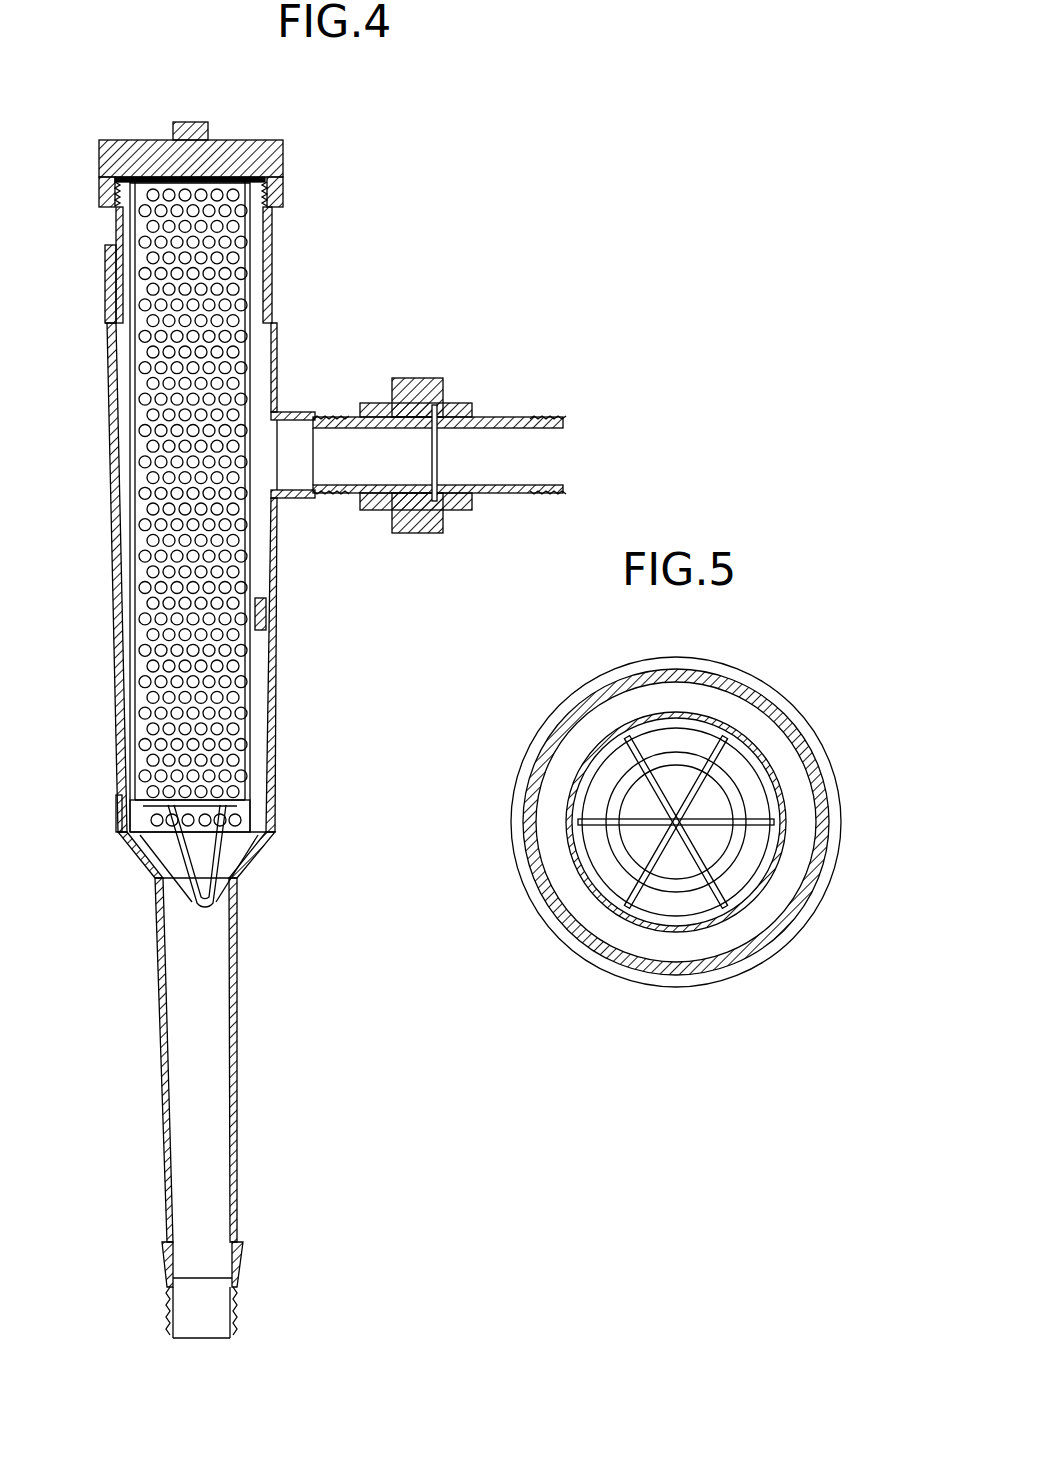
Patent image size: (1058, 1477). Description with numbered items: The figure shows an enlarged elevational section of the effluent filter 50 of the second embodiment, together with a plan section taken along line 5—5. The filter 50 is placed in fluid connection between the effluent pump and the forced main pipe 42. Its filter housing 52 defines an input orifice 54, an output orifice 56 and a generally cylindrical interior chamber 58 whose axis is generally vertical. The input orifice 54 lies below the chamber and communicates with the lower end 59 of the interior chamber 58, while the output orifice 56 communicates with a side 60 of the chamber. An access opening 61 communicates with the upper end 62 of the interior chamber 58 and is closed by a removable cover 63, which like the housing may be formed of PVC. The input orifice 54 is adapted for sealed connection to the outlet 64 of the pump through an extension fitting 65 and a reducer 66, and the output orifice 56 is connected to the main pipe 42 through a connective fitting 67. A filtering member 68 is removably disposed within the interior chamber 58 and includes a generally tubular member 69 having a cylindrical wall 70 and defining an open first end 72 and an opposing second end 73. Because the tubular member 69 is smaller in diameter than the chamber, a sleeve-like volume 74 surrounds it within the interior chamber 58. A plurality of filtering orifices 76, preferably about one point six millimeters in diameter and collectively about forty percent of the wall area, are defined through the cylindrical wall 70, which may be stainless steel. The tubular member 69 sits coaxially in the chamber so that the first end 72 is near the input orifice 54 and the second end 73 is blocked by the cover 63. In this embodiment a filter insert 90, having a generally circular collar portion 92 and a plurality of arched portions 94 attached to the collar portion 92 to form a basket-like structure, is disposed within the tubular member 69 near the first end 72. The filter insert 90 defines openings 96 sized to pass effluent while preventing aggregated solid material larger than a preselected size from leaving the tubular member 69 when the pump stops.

In FIG. 4, the section line 5- 5 is at (95, 697).
In FIG. 4, the main pipe 42 is at (505, 418).
In FIG. 4, the filter 50 is at (392, 315).
In FIG. 4, the filter housing 52 is at (272, 260).
In FIG. 5, the filter housing 52 is at (772, 700).
In FIG. 4, the input orifice 54 is at (262, 855).
In FIG. 4, the output orifice 56 is at (316, 498).
In FIG. 4, the interior chamber 58 is at (276, 537).
In FIG. 4, the lower end 59 is at (118, 812).
In FIG. 4, the side 60 is at (284, 442).
In FIG. 4, the access opening 61 is at (283, 200).
In FIG. 4, the upper end 62 is at (100, 196).
In FIG. 4, the removable cover 63 is at (284, 150).
In FIG. 4, the outlet 64 is at (240, 1302).
In FIG. 4, the extension fitting 65 is at (236, 1070).
In FIG. 5, the extension fitting 65 is at (560, 906).
In FIG. 4, the reducer 66 is at (157, 892).
In FIG. 5, the reducer 66 is at (728, 668).
In FIG. 4, the connective fitting 67 is at (432, 380).
In FIG. 4, the filtering member 68 is at (135, 410).
In FIG. 4, the tubular member 69 is at (262, 602).
In FIG. 4, the cylindrical wall 70 is at (122, 602).
In FIG. 5, the cylindrical wall 70 is at (616, 712).
In FIG. 4, the first end 72 is at (225, 821).
In FIG. 4, the second end 73 is at (200, 183).
In FIG. 4, the sleeve-like volume 74 is at (112, 466).
In FIG. 4, the filtering orifices 76 is at (147, 318).
In FIG. 4, the filter insert 90 is at (140, 850).
In FIG. 5, the filter insert 90 is at (785, 824).
In FIG. 4, the collar portion 92 is at (240, 800).
In FIG. 5, the collar portion 92 is at (582, 772).
In FIG. 4, the arched portions 94 is at (203, 912).
In FIG. 5, the arched portions 94 is at (768, 860).
In FIG. 5, the openings 96 is at (672, 775).